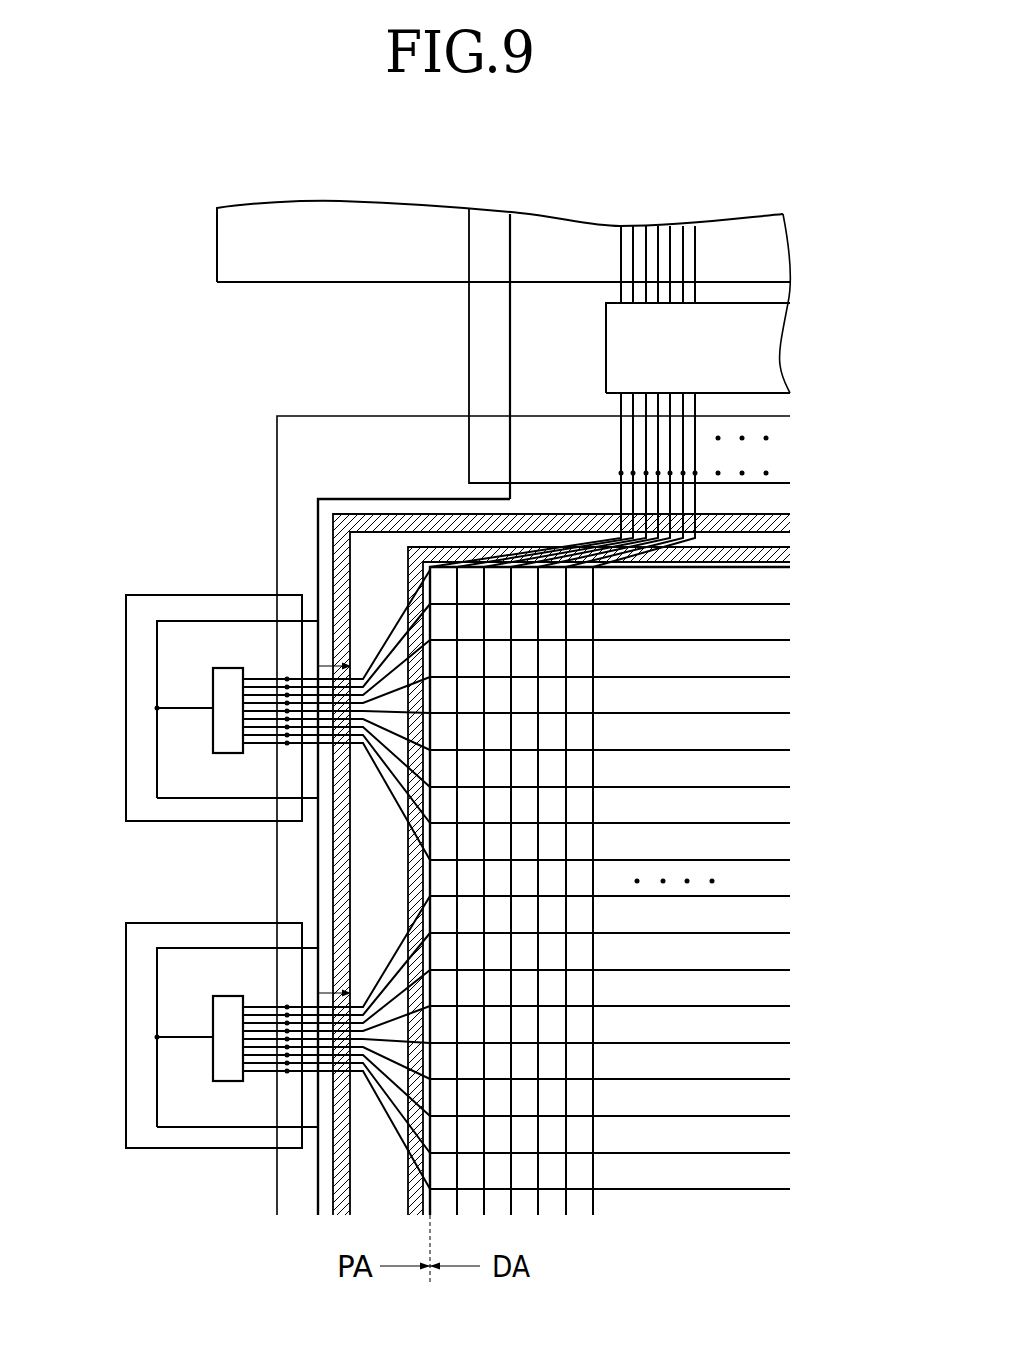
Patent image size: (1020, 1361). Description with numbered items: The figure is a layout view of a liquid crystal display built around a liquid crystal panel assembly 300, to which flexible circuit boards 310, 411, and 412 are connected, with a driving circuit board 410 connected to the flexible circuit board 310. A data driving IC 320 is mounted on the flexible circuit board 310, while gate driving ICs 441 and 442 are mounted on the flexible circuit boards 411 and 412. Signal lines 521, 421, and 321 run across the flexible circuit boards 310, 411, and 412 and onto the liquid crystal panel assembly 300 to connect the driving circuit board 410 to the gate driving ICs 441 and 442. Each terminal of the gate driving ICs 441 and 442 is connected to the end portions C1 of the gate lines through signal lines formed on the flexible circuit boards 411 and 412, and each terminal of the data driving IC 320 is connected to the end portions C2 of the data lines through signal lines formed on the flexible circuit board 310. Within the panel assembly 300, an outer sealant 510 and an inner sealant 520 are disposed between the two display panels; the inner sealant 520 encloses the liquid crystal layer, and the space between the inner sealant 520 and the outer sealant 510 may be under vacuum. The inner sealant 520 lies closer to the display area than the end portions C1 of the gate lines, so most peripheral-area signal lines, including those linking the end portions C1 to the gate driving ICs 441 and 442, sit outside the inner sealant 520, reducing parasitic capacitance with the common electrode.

The liquid crystal panel assembly 300 is at (270, 515).
The flexible circuit board 310 is at (469, 252).
The data driving IC 320 is at (606, 330).
The signal line 321 is at (318, 512).
The driving circuit board 410 is at (217, 252).
The flexible circuit board 411 is at (126, 755).
The flexible circuit board 412 is at (126, 1040).
The signal line 421 is at (182, 621).
The gate driving IC 441 is at (213, 688).
The gate driving IC 442 is at (213, 1073).
The outer sealant 510 is at (745, 514).
The inner sealant 520 is at (763, 547).
The signal line 521 is at (510, 248).
The end portions of the gate lines C1 is at (287, 690).
The end portions of the data lines C2 is at (695, 473).